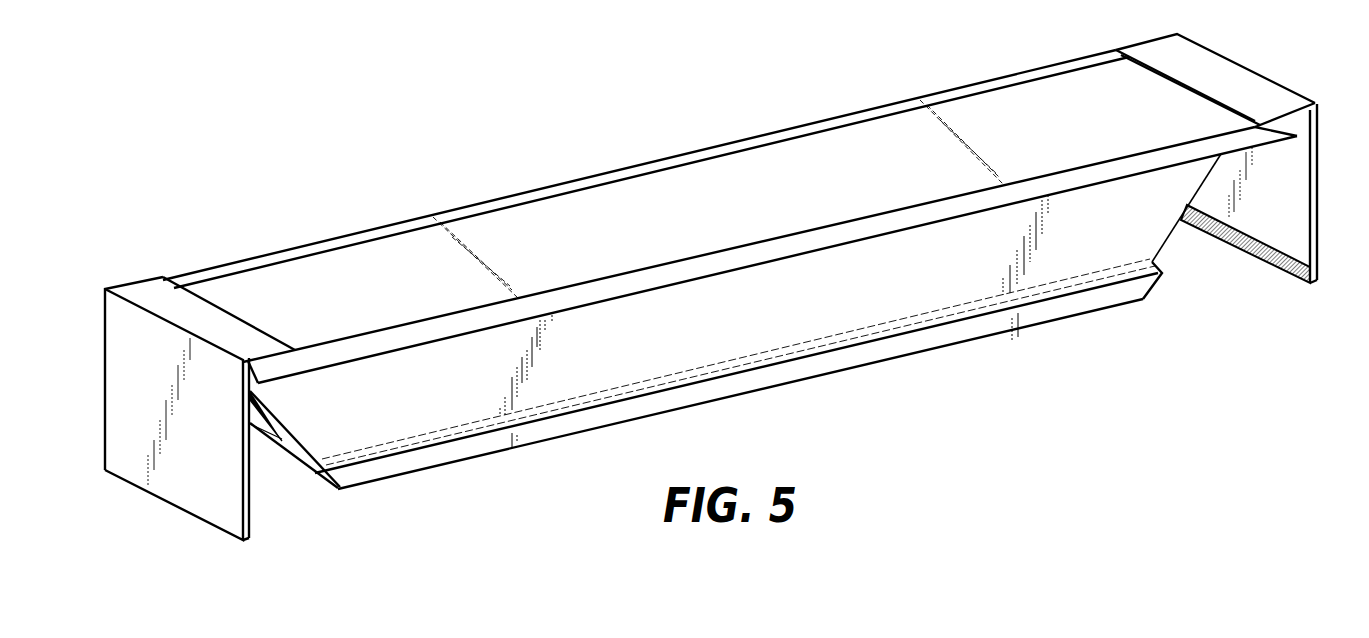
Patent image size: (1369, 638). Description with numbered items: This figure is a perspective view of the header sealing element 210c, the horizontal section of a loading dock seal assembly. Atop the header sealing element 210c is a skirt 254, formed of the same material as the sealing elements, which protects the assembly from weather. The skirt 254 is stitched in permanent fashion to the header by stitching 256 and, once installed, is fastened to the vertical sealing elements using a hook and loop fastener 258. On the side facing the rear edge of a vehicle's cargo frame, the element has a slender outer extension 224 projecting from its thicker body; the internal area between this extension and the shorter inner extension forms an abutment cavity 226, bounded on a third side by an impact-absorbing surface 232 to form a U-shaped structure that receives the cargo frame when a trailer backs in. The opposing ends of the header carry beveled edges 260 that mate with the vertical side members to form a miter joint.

The header sealing element 210c is at (708, 287).
The outer extension 224 is at (1157, 160).
The abutment cavity 226 is at (906, 343).
The impact-absorbing surface 232 is at (776, 308).
The skirt 254 is at (123, 377).
The stitching 256 is at (219, 309).
The hook and loop fastener 258 is at (1285, 270).
The beveled edges 260 is at (305, 463).